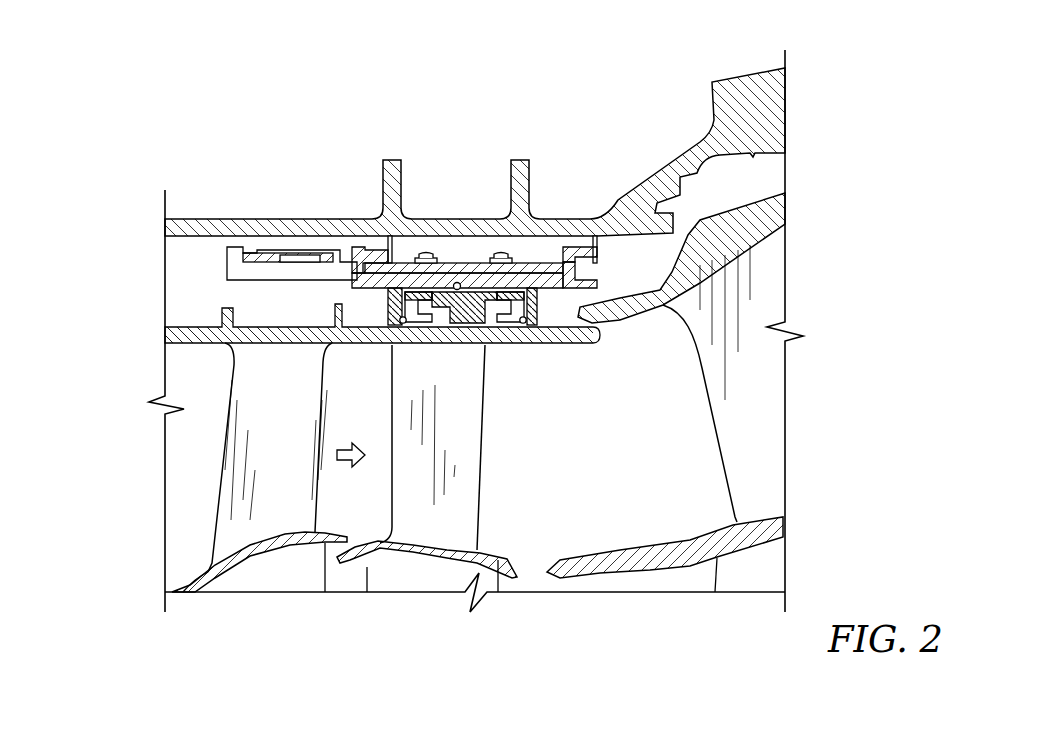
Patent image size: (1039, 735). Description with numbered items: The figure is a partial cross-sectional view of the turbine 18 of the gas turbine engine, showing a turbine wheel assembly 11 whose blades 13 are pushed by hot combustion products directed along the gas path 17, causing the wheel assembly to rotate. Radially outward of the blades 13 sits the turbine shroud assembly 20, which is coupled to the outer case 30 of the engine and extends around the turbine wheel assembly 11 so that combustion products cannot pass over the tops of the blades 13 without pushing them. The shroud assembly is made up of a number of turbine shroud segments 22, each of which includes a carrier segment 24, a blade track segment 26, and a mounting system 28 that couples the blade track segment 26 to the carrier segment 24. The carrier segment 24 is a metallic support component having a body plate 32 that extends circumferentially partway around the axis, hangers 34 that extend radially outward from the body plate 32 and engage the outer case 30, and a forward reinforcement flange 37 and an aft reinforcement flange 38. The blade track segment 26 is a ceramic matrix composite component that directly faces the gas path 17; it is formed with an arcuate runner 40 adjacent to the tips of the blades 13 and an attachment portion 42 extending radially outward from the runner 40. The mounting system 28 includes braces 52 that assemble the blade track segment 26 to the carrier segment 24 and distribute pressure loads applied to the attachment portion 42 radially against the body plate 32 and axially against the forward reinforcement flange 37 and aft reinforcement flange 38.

The turbine wheel assembly 11 is at (543, 529).
The blades 13 is at (458, 499).
The gas path 17 is at (350, 440).
The turbine 18 is at (186, 166).
The turbine shroud assembly 20 is at (436, 241).
The turbine shroud segment 22 is at (474, 255).
The carrier segment 24 is at (533, 259).
The blade track segment 26 is at (570, 337).
The mounting system 28 is at (496, 244).
The outer case 30 is at (270, 212).
The body plate 32 is at (545, 273).
The hangers 34 is at (362, 262).
The forward reinforcement flange 37 is at (379, 302).
The aft reinforcement flange 38 is at (539, 303).
The runner 40 is at (550, 337).
The attachment portion 42 is at (458, 312).
The braces 52 is at (427, 313).